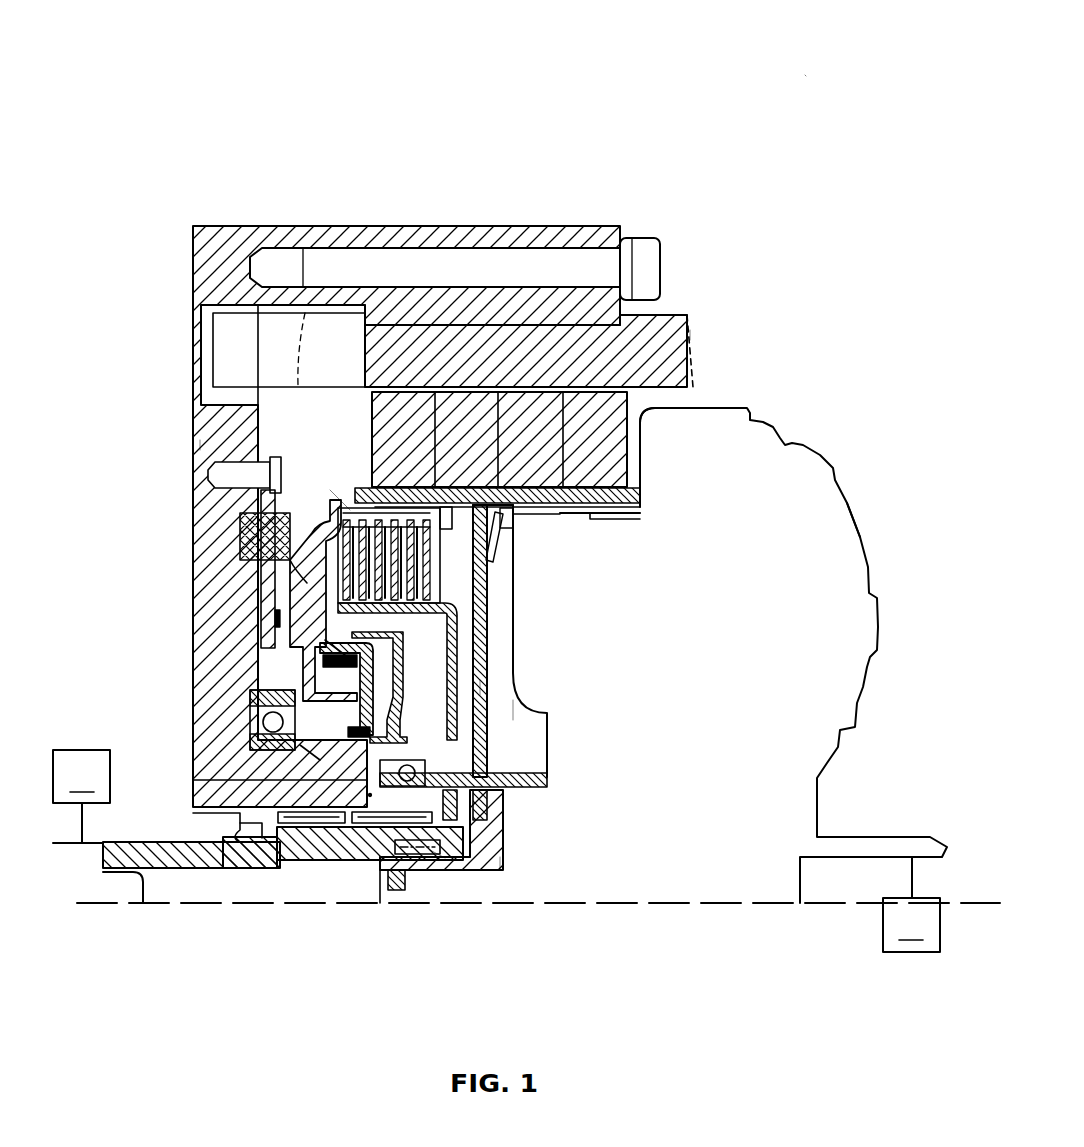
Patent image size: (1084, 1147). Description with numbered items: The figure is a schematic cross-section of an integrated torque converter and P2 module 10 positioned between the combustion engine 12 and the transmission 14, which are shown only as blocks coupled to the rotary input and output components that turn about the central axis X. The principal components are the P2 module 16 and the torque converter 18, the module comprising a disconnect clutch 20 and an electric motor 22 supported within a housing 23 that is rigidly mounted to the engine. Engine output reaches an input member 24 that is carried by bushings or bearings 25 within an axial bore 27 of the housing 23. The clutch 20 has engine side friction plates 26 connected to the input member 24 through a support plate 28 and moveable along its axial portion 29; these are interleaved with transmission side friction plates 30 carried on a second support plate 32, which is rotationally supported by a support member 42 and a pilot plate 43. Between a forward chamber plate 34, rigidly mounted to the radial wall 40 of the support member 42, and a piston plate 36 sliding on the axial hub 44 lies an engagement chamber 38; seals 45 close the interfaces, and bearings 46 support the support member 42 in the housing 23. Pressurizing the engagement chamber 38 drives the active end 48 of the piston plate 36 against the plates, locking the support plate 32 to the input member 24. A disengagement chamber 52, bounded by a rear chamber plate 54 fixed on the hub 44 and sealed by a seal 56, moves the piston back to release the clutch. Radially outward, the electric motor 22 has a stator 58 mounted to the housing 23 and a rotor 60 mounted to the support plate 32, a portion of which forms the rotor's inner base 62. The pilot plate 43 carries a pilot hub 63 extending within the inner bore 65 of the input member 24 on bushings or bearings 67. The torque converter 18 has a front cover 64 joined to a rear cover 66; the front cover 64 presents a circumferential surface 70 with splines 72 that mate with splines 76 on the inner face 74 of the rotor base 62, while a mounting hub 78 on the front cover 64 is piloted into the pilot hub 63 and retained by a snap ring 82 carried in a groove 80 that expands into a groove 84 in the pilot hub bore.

The integrated torque converter and P2 module 10 is at (805, 75).
The combustion engine 12 is at (81, 796).
The transmission 14 is at (911, 904).
The P2 module 16 is at (188, 385).
The torque converter 18 is at (830, 432).
The disconnect clutch 20 is at (255, 660).
The electric motor 22 is at (706, 300).
The housing 23 is at (200, 445).
The input member 24 is at (313, 857).
The bushings or bearings 25 is at (280, 847).
The engine side friction plates 26 is at (440, 583).
The axial bore 27 is at (200, 830).
The support plate 28 is at (480, 687).
The axial portion 29 is at (447, 630).
The transmission side friction plates 30 is at (342, 505).
The support plate 32 is at (322, 490).
The forward chamber plate 34 is at (340, 717).
The piston plate 36 is at (313, 617).
The engagement chamber 38 is at (300, 695).
The radial wall 40 is at (250, 730).
The support member 42 is at (307, 583).
The pilot plate 43 is at (487, 767).
The axial hub 44 is at (347, 817).
The seals 45 is at (330, 650).
The bearings 46 is at (300, 745).
The active end 48 is at (443, 560).
The disengagement chamber 52 is at (480, 687).
The rear chamber plate 54 is at (513, 713).
The seal 56 is at (487, 653).
The stator 58 is at (655, 352).
The rotor 60 is at (600, 434).
The inner base 62 is at (625, 495).
The pilot hub 63 is at (493, 838).
The front cover 64 is at (690, 405).
The inner bore 65 is at (500, 857).
The rear cover 66 is at (852, 500).
The bushings or bearings 67 is at (437, 855).
The circumferential surface 70 is at (640, 515).
The splines 72 is at (593, 514).
The inner face 74 is at (620, 508).
The splines 76 is at (533, 512).
The mounting hub 78 is at (500, 887).
The groove 80 is at (410, 878).
The snap ring 82 is at (395, 890).
The groove 84 is at (372, 883).
The central axis X is at (752, 906).